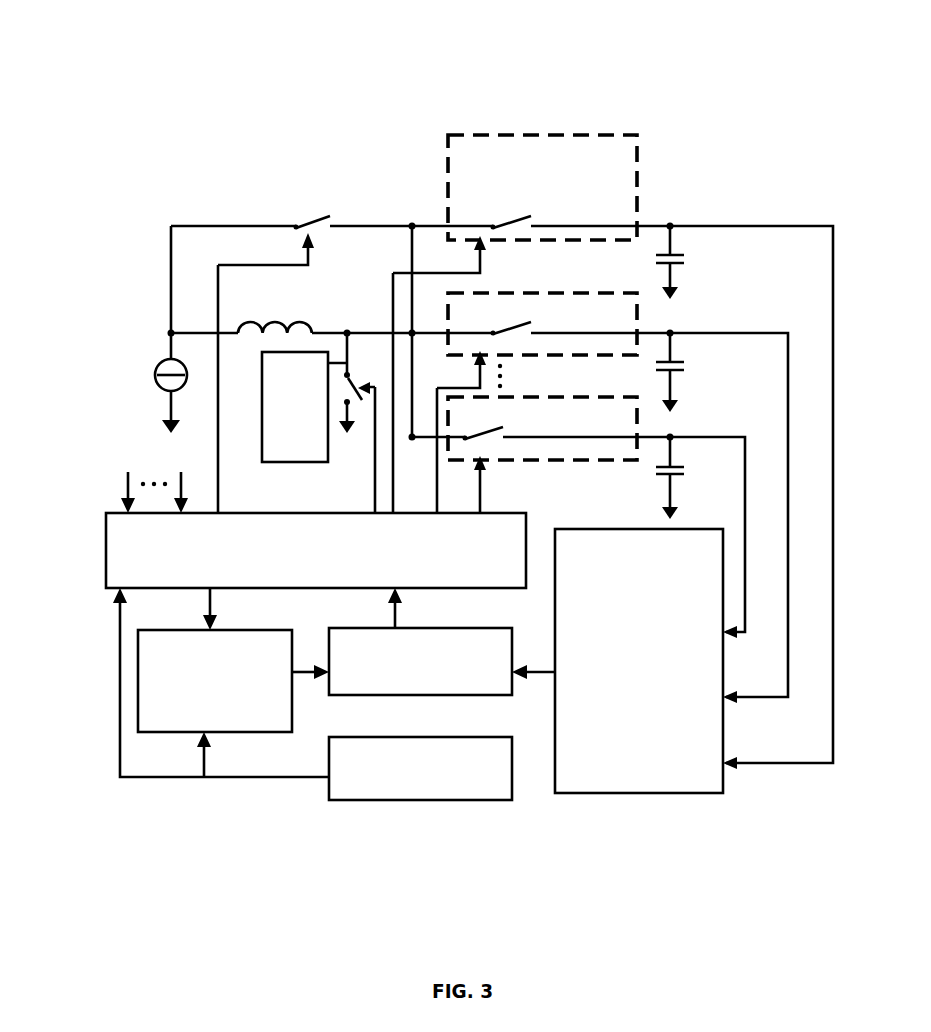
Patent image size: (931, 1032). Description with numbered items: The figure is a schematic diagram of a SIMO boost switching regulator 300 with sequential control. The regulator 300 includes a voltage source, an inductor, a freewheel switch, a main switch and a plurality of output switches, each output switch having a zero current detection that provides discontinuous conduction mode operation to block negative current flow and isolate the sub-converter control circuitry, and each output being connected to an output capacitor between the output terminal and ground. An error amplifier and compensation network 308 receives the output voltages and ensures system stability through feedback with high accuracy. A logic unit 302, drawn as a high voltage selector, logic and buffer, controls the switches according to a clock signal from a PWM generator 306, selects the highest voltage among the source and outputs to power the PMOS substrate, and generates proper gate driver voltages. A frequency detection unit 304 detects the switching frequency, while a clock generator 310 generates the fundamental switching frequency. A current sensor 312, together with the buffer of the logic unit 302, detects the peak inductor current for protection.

The SIMO boost switching regulator 300 is at (556, 50).
The logic unit 302 is at (106, 543).
The frequency detection unit 304 is at (136, 673).
The pulse-width modulation generator 306 is at (433, 628).
The error amplifier and compensation network 308 is at (623, 793).
The clock generator 310 is at (397, 800).
The current sensor 312 is at (285, 462).